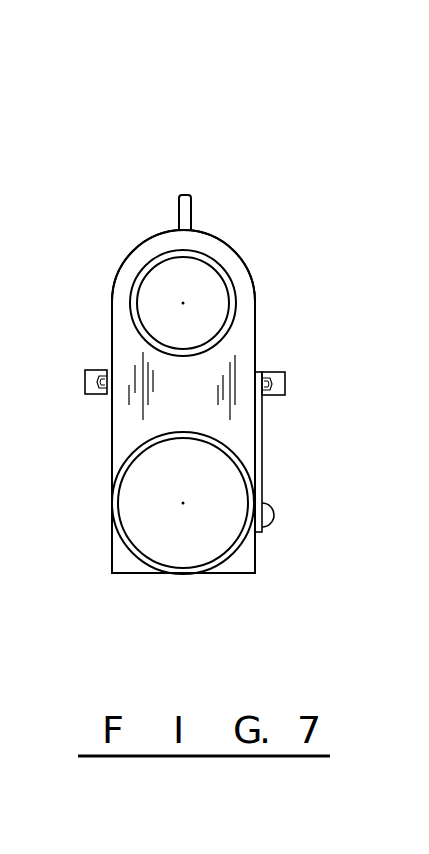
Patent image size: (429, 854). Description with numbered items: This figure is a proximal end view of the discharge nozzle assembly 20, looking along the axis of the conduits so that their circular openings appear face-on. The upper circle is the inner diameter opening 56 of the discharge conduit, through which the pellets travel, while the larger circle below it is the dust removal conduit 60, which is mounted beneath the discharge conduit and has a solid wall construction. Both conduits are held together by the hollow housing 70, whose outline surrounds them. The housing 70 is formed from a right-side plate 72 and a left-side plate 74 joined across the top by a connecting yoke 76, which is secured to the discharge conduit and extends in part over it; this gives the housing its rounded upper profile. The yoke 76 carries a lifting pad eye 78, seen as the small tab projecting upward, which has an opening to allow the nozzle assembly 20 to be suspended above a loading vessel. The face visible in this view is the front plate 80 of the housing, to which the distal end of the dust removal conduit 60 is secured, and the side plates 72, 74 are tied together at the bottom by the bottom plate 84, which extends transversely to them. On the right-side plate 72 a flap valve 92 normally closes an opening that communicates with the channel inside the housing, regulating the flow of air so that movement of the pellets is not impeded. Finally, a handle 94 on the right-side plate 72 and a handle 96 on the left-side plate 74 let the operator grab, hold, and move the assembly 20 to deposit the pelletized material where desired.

The discharge nozzle assembly 20 is at (330, 133).
The inner diameter openings 56 is at (198, 282).
The dust removal conduit 60 is at (143, 495).
The hollow housing 70 is at (257, 318).
The right-side plate 72 is at (262, 450).
The left-side plate 74 is at (108, 415).
The connecting yoke 76 is at (248, 266).
The lifting pad eye 78 is at (190, 208).
The front plate 80 is at (122, 338).
The bottom plate 84 is at (147, 577).
The flap valve 92 is at (275, 517).
The handle 94 is at (287, 380).
The handle 96 is at (84, 380).